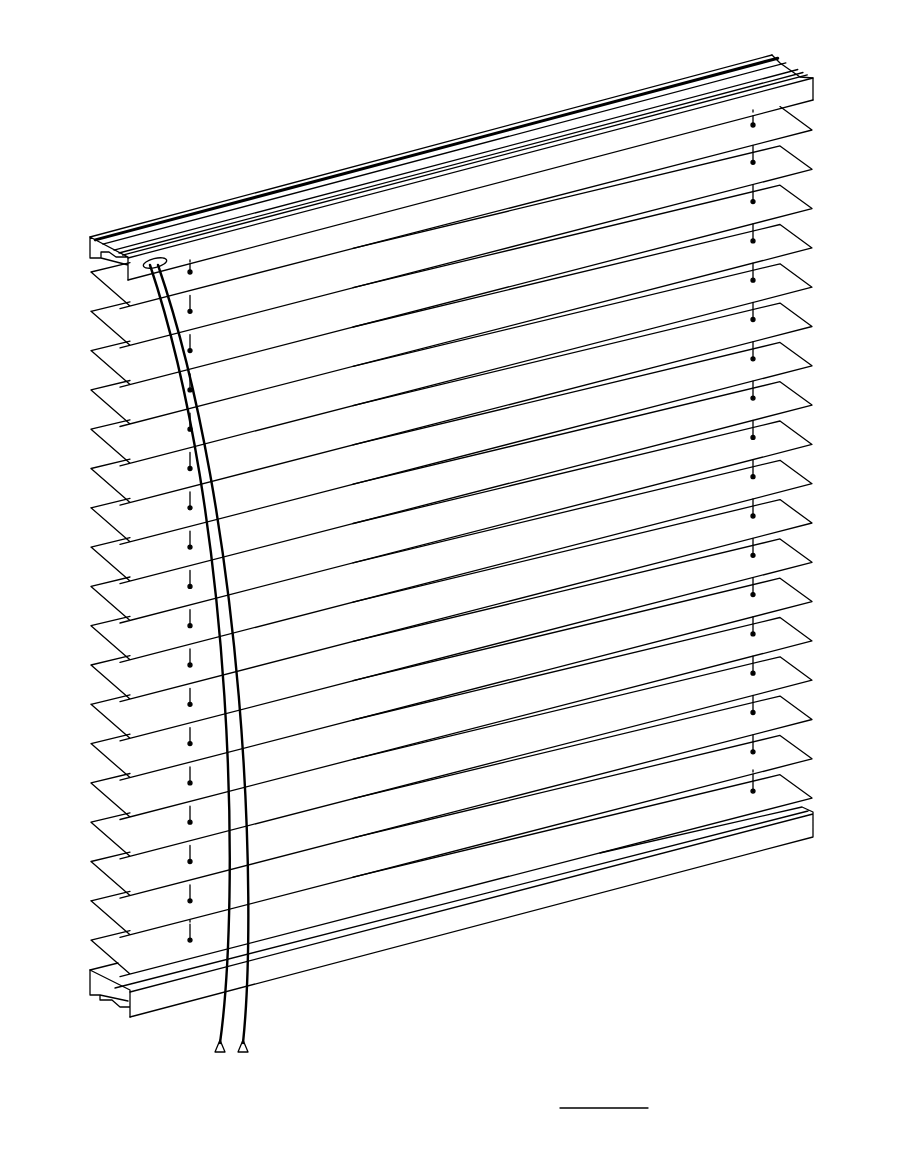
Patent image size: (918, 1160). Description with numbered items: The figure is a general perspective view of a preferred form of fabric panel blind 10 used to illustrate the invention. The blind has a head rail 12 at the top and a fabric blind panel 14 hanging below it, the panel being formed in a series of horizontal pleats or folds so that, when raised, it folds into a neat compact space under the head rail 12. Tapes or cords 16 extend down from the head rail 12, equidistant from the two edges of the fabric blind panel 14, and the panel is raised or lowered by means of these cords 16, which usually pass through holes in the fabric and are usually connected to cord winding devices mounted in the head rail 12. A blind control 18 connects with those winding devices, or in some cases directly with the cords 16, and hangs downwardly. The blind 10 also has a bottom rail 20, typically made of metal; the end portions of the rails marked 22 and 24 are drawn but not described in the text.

The fabric panel blind 10 is at (632, 901).
The head rail 12 is at (487, 172).
The fabric blind panel 14 is at (368, 302).
The tapes or cords 16 is at (190, 311).
The blind control 18 is at (247, 1028).
The bottom rail 20 is at (497, 907).
The headrail end profile 22 is at (98, 250).
The bottom rail end profile 24 is at (90, 995).